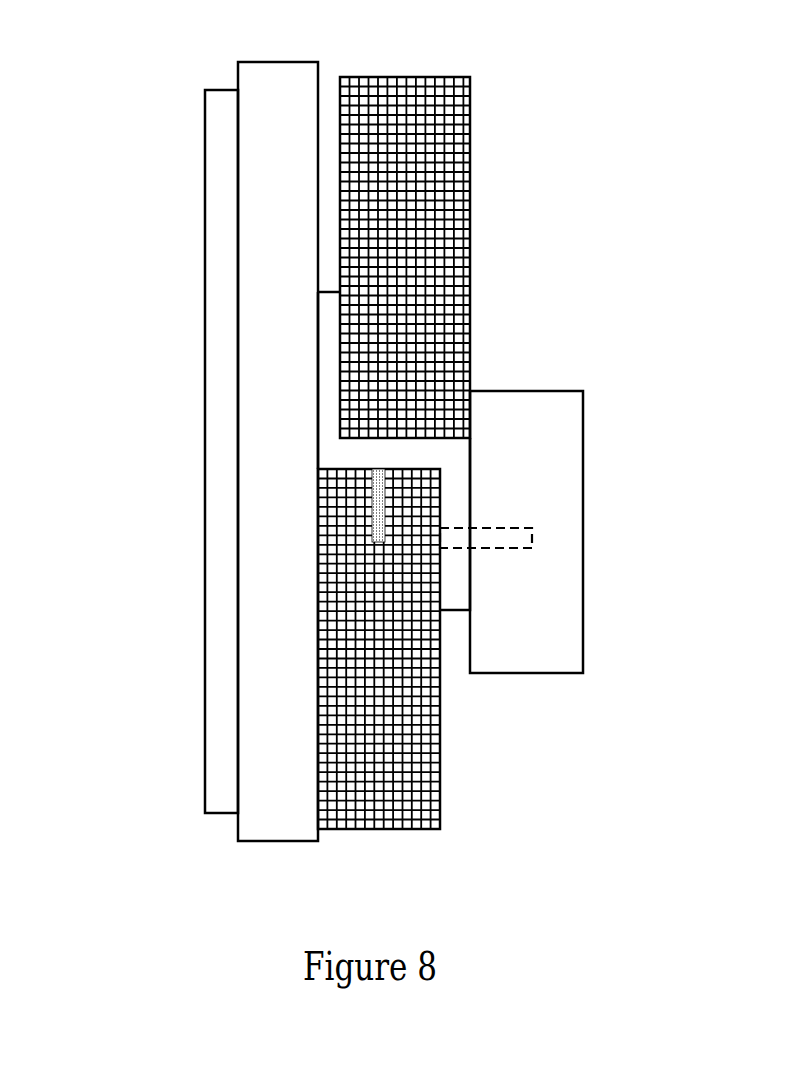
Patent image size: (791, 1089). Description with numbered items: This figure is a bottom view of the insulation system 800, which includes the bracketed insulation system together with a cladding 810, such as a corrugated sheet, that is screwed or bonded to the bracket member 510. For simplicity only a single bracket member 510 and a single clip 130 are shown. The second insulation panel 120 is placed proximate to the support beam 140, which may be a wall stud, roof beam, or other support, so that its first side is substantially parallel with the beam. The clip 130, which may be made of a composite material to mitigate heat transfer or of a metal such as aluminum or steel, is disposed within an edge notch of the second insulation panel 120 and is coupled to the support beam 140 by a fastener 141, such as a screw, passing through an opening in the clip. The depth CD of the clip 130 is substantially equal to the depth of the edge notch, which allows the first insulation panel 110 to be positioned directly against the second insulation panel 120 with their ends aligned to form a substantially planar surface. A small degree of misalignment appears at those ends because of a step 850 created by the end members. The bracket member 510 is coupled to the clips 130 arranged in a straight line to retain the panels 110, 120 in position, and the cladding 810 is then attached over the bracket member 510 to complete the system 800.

The system 800 is at (125, 62).
The cladding 810 is at (222, 90).
The bracket member 510 is at (277, 62).
The second insulation panel 120 is at (483, 246).
The first insulation panel 110 is at (458, 777).
The depth of the clips CD is at (392, 455).
The clip 130 is at (477, 464).
The support beam 140 is at (595, 393).
The fastener 141 is at (508, 551).
The step 850 is at (313, 428).